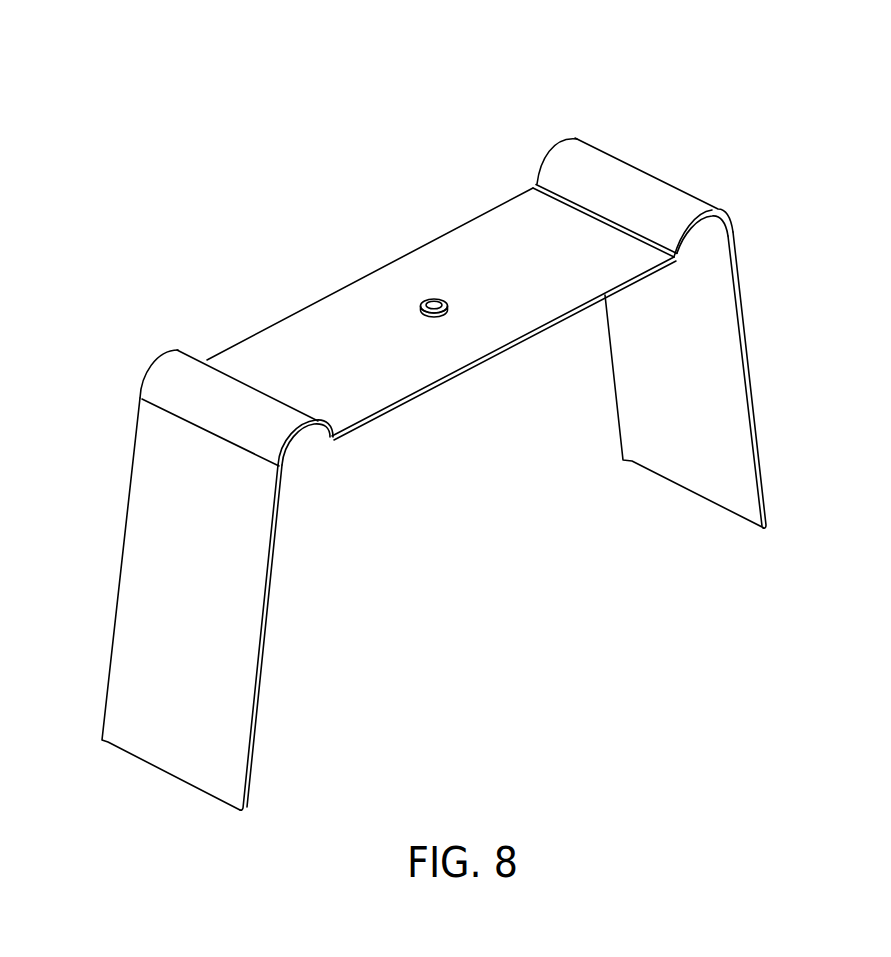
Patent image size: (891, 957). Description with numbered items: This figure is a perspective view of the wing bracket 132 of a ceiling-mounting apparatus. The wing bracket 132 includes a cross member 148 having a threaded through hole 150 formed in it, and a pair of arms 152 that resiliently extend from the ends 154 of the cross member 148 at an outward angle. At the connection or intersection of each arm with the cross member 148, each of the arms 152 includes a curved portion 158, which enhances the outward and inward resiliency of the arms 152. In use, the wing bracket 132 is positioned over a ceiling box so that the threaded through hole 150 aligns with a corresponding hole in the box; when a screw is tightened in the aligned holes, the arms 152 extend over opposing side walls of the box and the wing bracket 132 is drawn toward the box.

The wing bracket 132 is at (604, 75).
The cross member 148 is at (333, 357).
The threaded through hole 150 is at (431, 297).
The arms 152 is at (695, 400).
The ends of the cross member 154 is at (562, 205).
The curved portion 158 is at (623, 177).